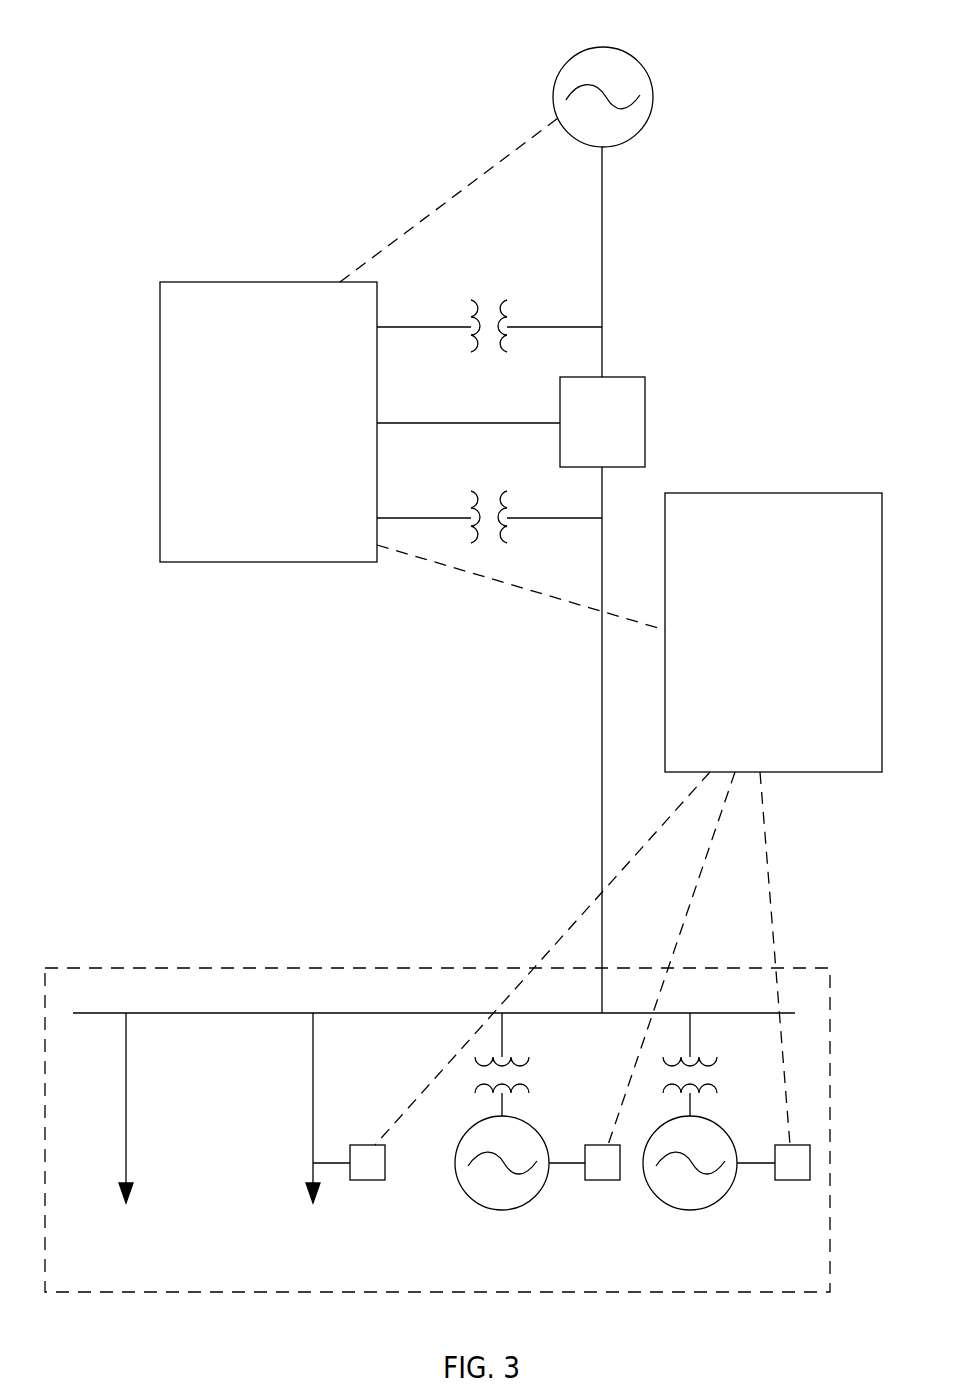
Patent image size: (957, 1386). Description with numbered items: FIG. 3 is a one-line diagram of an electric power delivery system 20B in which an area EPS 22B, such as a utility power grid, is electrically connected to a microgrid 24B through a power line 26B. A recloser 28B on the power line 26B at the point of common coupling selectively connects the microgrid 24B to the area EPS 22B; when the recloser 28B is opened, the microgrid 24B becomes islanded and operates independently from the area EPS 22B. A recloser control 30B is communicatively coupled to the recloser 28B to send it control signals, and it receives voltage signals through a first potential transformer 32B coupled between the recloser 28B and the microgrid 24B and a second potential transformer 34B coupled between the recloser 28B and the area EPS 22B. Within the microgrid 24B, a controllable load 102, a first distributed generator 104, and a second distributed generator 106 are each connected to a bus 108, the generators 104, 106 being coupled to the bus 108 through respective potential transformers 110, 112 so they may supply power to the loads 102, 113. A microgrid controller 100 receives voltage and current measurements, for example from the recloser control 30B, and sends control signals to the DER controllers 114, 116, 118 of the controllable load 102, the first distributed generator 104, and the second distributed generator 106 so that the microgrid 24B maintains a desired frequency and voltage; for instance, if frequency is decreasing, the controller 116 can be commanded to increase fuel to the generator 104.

The electric power delivery system 20B is at (703, 72).
The area EPS 22B is at (318, 72).
The microgrid 24B is at (830, 1140).
The power line 26B is at (602, 272).
The recloser 28B is at (645, 455).
The recloser control 30B is at (160, 453).
The first potential transformer 32B is at (502, 490).
The second potential transformer 34B is at (502, 298).
The microgrid controller 100 is at (780, 493).
The controllable load 102 is at (313, 1127).
The first distributed generator 104 is at (502, 1210).
The second distributed generator 106 is at (690, 1210).
The bus 108 is at (190, 1013).
The potential transformer 110 is at (518, 1062).
The potential transformer 112 is at (703, 1085).
The load 113 is at (126, 1127).
The DER controller 114 is at (367, 1180).
The DER controller 116 is at (602, 1180).
The DER controller 118 is at (792, 1180).